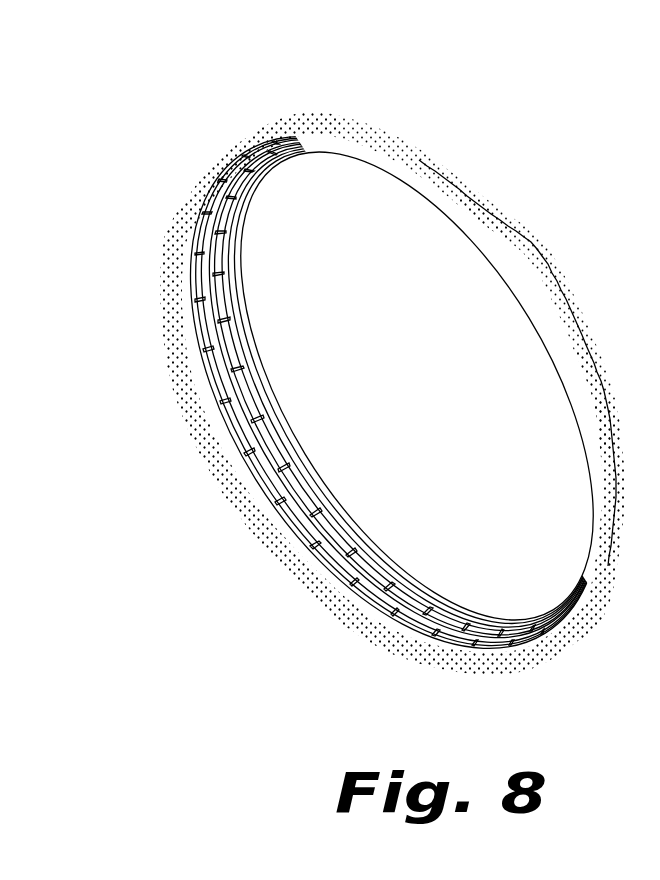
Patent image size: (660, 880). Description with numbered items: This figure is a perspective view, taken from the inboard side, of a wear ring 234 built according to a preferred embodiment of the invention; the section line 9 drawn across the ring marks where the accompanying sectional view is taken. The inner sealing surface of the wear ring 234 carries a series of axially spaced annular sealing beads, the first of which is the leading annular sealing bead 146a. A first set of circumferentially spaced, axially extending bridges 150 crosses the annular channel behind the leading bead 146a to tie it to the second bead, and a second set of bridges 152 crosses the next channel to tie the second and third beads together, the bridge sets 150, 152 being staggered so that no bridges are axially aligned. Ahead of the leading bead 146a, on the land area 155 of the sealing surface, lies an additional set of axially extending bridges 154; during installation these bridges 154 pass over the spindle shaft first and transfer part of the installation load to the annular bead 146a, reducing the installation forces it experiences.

The section line 9- 9 is at (288, 53).
The wear ring 234 is at (492, 123).
The leading annular sealing bead 146a is at (237, 443).
The additional set of axially extending bridges 154 is at (288, 505).
The first set of axially extending bridges 150 is at (395, 592).
The second set of axially extending bridges 152 is at (457, 613).
The land area 155 is at (366, 618).